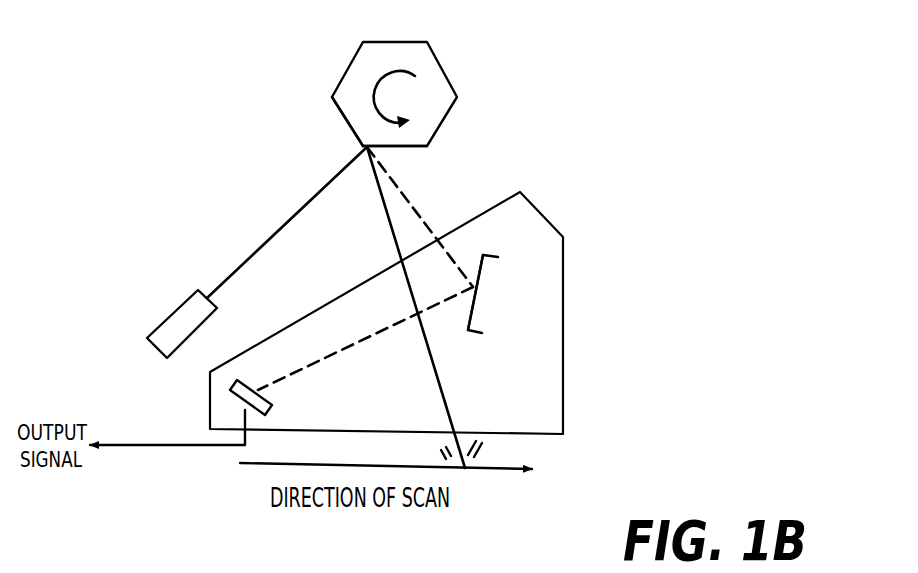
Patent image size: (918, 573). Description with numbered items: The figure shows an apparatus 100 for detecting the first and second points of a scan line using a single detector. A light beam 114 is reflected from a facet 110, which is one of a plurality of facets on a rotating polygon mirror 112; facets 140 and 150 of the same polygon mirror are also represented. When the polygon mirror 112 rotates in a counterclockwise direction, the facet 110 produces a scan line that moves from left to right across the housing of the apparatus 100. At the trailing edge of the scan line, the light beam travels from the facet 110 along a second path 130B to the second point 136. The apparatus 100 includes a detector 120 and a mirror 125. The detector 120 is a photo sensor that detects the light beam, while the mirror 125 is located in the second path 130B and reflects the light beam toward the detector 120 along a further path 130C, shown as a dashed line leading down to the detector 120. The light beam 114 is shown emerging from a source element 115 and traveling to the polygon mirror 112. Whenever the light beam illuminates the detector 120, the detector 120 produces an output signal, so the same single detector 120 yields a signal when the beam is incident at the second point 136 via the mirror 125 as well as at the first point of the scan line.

The apparatus 100 is at (542, 203).
The facet 110 is at (410, 147).
The rotating polygon mirror 112 is at (423, 55).
The light beam 114 is at (270, 237).
The laser source 115 is at (167, 332).
The detector 120 is at (228, 390).
The mirror 125 is at (475, 310).
The second path 130B is at (412, 203).
The path 130C is at (320, 363).
The second point 136 is at (473, 287).
The facet 140 is at (348, 118).
The facet 150 is at (348, 63).